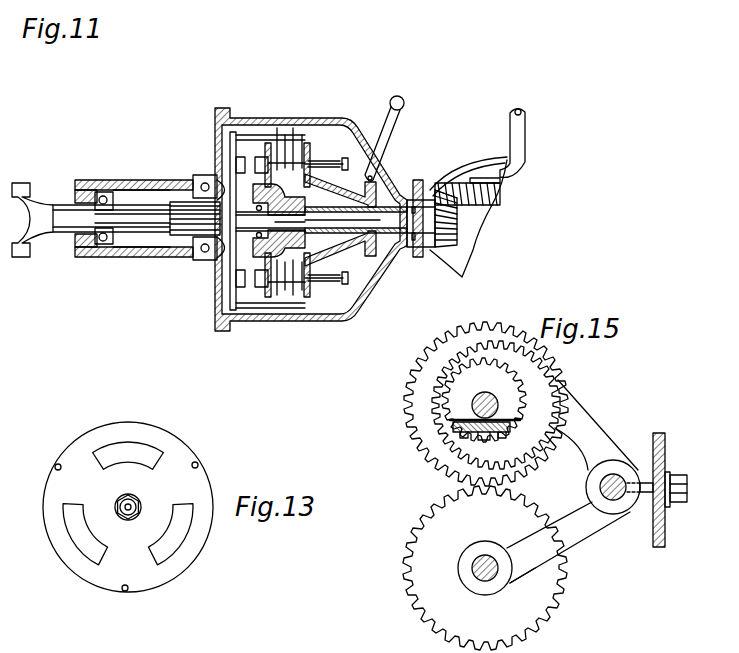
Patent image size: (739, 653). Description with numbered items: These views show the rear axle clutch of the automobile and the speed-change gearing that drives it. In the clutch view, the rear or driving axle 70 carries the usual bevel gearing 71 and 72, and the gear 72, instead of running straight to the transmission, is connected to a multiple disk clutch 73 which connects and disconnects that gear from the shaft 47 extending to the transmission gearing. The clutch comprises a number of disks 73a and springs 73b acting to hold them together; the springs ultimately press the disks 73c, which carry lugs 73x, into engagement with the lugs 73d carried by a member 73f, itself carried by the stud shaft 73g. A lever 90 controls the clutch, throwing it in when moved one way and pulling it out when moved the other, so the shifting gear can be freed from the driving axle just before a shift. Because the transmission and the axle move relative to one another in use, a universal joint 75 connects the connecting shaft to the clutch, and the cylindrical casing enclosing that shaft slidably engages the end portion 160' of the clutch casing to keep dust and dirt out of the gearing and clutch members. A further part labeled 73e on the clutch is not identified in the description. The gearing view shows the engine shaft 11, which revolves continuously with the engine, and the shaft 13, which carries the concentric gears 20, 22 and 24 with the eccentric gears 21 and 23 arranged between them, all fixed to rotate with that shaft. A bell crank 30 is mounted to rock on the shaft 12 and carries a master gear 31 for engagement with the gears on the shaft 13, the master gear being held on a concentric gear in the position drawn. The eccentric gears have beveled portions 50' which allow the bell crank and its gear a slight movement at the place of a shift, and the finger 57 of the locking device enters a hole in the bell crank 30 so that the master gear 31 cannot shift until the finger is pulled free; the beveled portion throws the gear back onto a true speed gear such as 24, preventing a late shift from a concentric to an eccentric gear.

In FIG. 11, the universal joint 75 is at (29, 253).
In FIG. 11, the end portion of the clutch casing 160' is at (150, 231).
In FIG. 11, the shaft 47 is at (160, 230).
In FIG. 11, the stud shaft 73g is at (178, 203).
In FIG. 11, the lugs 73x is at (258, 283).
In FIG. 11, the lugs 73d is at (235, 290).
In FIG. 11, the member 73f is at (240, 268).
In FIG. 11, the clutch 73 is at (266, 332).
In FIG. 11, the disks 73c is at (263, 300).
In FIG. 13, the disks 73c is at (73, 577).
In FIG. 11, the springs 73b is at (320, 162).
In FIG. 11, the spring bolt 73e is at (326, 284).
In FIG. 11, the disks 73a is at (285, 140).
In FIG. 11, the lever 90 is at (395, 122).
In FIG. 11, the bevel gearing 71 is at (490, 205).
In FIG. 11, the bevel gear 72 is at (460, 272).
In FIG. 11, the driving axle 70 is at (524, 148).
In FIG. 15, the concentric gear 20 is at (465, 404).
In FIG. 15, the eccentric gear 21 is at (430, 372).
In FIG. 15, the concentric gear 22 is at (440, 395).
In FIG. 15, the eccentric gear 23 is at (455, 384).
In FIG. 15, the shaft 13 is at (484, 397).
In FIG. 15, the beveled portions 50' is at (459, 453).
In FIG. 15, the concentric gear 24 is at (535, 378).
In FIG. 15, the engine shaft 11 is at (478, 570).
In FIG. 15, the bell crank 30 is at (577, 484).
In FIG. 15, the master gear 31 is at (548, 583).
In FIG. 15, the shaft 12 is at (616, 502).
In FIG. 15, the finger 57 is at (650, 470).